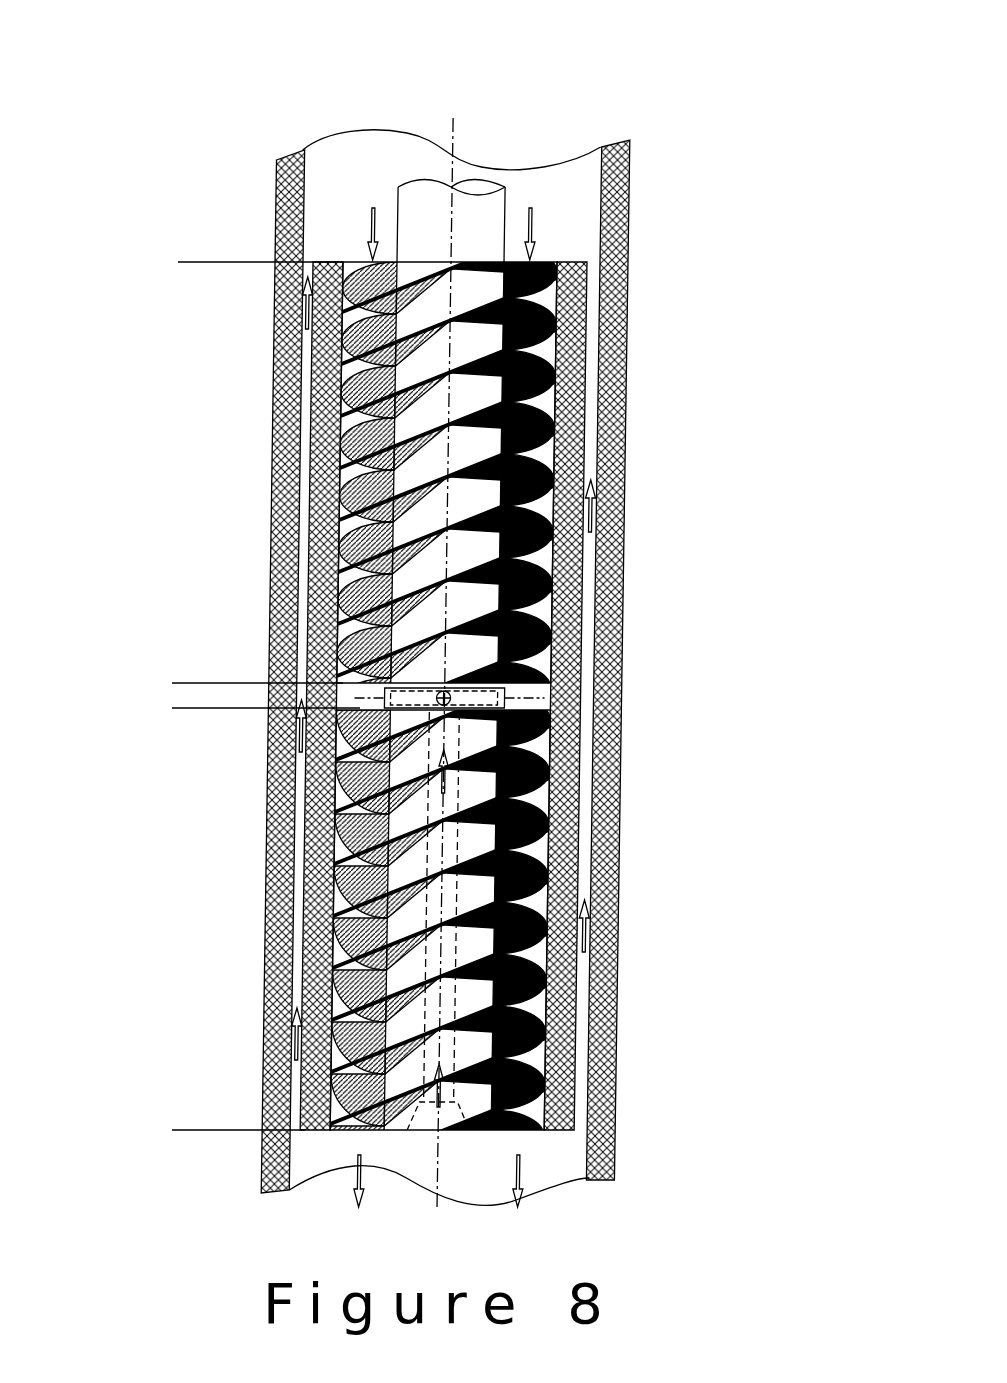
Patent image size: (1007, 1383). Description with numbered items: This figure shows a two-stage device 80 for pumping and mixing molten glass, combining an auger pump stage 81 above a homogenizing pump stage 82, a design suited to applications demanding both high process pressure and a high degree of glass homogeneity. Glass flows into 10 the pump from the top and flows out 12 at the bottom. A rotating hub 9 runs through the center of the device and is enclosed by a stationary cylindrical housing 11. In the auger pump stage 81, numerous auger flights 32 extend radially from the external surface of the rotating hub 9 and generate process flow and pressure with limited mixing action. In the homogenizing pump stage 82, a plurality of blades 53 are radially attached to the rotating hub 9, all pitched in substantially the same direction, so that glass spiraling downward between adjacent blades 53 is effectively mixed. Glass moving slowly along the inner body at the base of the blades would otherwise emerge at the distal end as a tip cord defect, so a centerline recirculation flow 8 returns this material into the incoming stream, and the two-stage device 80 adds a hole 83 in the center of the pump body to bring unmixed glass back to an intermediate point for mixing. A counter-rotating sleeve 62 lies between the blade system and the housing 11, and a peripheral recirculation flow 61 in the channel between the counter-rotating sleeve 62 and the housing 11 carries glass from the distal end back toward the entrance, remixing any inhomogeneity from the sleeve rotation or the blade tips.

The two-stage device 80 is at (459, 648).
The glass inflow 10 is at (527, 240).
The rotating hub 9 is at (518, 197).
The housing 11 is at (628, 437).
The auger flights 32 is at (552, 577).
The hole 83 is at (550, 675).
The peripheral recirculation flow 61 is at (445, 873).
The counter-rotating sleeve 62 is at (587, 800).
The centerline recirculation flow 8 is at (540, 830).
The blades 53 is at (540, 927).
The glass outflow 12 is at (515, 1192).
The auger pump stage 81 is at (190, 262).
The homogenizing pump stage 82 is at (183, 708).